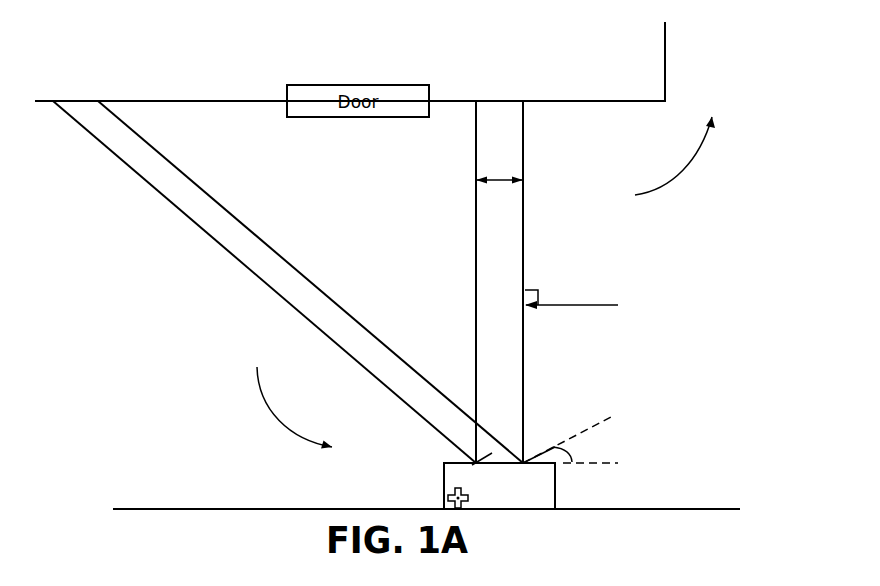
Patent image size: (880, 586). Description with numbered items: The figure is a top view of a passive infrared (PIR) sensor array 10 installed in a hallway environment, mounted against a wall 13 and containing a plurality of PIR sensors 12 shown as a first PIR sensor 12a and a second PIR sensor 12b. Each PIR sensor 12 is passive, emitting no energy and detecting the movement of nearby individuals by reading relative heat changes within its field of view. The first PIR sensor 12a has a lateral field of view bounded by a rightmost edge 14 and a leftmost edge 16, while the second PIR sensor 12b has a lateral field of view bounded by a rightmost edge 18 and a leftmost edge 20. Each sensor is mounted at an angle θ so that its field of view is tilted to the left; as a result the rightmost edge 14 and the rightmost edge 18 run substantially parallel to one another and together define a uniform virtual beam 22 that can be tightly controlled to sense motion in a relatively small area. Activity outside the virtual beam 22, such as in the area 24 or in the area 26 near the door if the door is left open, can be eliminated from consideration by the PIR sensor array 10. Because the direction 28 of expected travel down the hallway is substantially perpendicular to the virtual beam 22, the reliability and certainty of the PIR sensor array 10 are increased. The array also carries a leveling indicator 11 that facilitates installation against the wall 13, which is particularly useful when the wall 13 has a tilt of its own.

The passive infrared (PIR) sensor array 10 is at (555, 478).
The leveling indicator 11 is at (468, 497).
The PIR sensor 12 is at (289, 396).
The first PIR sensor 12a is at (468, 463).
The second PIR sensor 12b is at (523, 461).
The wall 13 is at (240, 508).
The rightmost edge 14 is at (475, 258).
The leftmost edge 16 is at (290, 305).
The rightmost edge 18 is at (525, 212).
The leftmost edge 20 is at (358, 322).
The virtual beam 22 is at (515, 195).
The area 24 is at (661, 161).
The area 26 is at (446, 20).
The direction of expected travel 28 is at (602, 305).